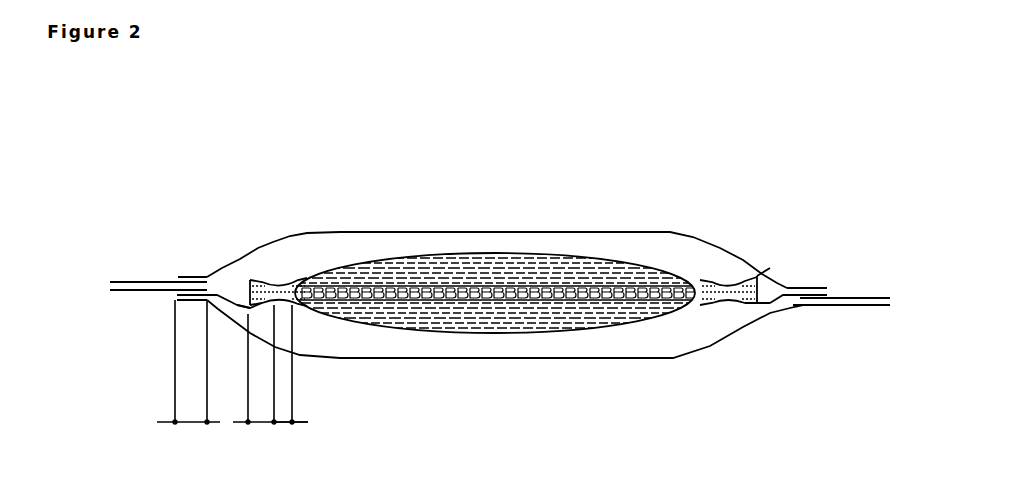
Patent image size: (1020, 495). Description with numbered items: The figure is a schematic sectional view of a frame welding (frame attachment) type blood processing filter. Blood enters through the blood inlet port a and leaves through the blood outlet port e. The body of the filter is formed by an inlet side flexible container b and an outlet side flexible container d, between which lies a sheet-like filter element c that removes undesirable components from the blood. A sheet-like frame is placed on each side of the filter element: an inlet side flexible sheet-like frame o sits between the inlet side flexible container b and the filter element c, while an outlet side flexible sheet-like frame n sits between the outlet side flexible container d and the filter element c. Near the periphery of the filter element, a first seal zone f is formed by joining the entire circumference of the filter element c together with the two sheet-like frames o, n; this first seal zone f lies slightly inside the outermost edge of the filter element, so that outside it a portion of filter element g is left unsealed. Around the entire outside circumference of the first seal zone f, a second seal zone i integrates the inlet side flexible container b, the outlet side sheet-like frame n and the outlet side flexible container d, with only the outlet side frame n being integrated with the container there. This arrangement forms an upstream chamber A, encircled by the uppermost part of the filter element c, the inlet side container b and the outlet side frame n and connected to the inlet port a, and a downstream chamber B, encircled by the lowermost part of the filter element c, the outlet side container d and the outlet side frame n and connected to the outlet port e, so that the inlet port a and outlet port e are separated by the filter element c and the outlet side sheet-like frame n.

The blood inlet port a is at (154, 275).
The inlet side flexible container b is at (366, 230).
The outlet side flexible container d is at (565, 362).
The blood outlet port e is at (859, 313).
The upstream chamber A is at (445, 242).
The downstream chamber B is at (603, 345).
The sheet-like filter element c is at (523, 270).
The inlet side flexible sheet-like frame o is at (282, 277).
The outlet side flexible sheet-like frame n is at (268, 322).
The second seal zone i is at (188, 375).
The unsealed filter element g is at (270, 378).
The first seal zone f is at (291, 388).